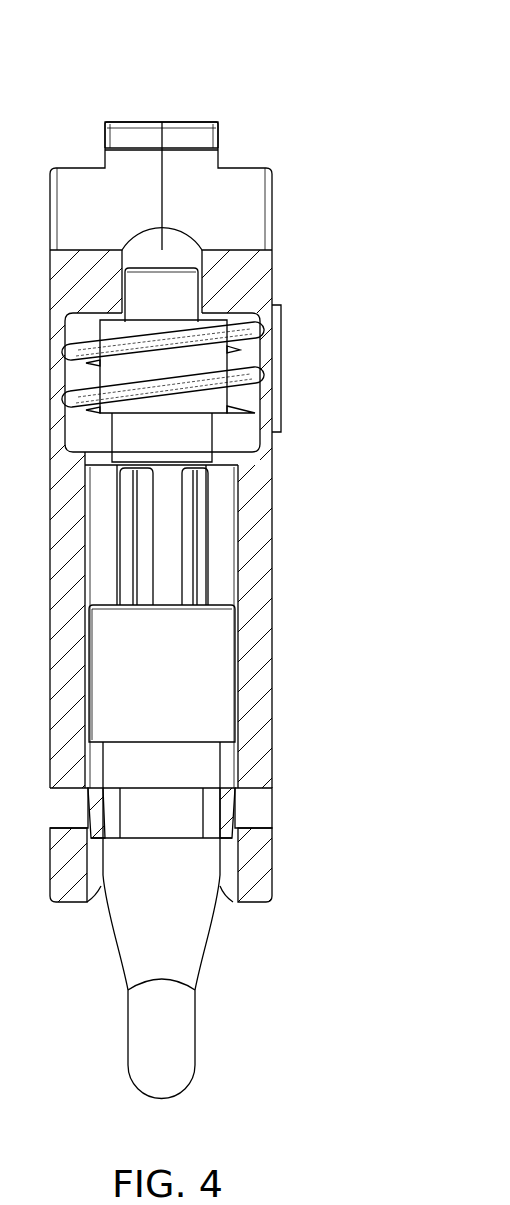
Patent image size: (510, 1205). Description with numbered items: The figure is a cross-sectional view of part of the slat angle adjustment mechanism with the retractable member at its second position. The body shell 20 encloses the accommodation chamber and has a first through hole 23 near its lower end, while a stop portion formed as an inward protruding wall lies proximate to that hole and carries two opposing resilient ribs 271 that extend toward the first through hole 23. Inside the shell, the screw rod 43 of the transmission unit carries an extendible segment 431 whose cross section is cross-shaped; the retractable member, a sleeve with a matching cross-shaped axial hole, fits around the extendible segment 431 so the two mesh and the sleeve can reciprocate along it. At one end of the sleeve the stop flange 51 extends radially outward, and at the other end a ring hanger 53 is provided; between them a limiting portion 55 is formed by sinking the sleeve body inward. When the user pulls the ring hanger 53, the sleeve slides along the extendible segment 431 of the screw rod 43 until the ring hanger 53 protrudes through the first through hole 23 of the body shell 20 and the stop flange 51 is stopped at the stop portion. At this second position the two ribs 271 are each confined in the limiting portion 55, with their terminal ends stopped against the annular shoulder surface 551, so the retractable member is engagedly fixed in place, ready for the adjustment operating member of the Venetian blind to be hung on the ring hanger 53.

The body shell 20 is at (182, 120).
The screw rod 43 is at (245, 330).
The extendible segment 431 is at (202, 512).
The stop flange 51 is at (217, 605).
The limiting portion 55 is at (203, 803).
The ribs 271 is at (225, 812).
The annular shoulder surface 551 is at (230, 833).
The first through hole 23 is at (95, 898).
The ring hanger 53 is at (195, 1078).